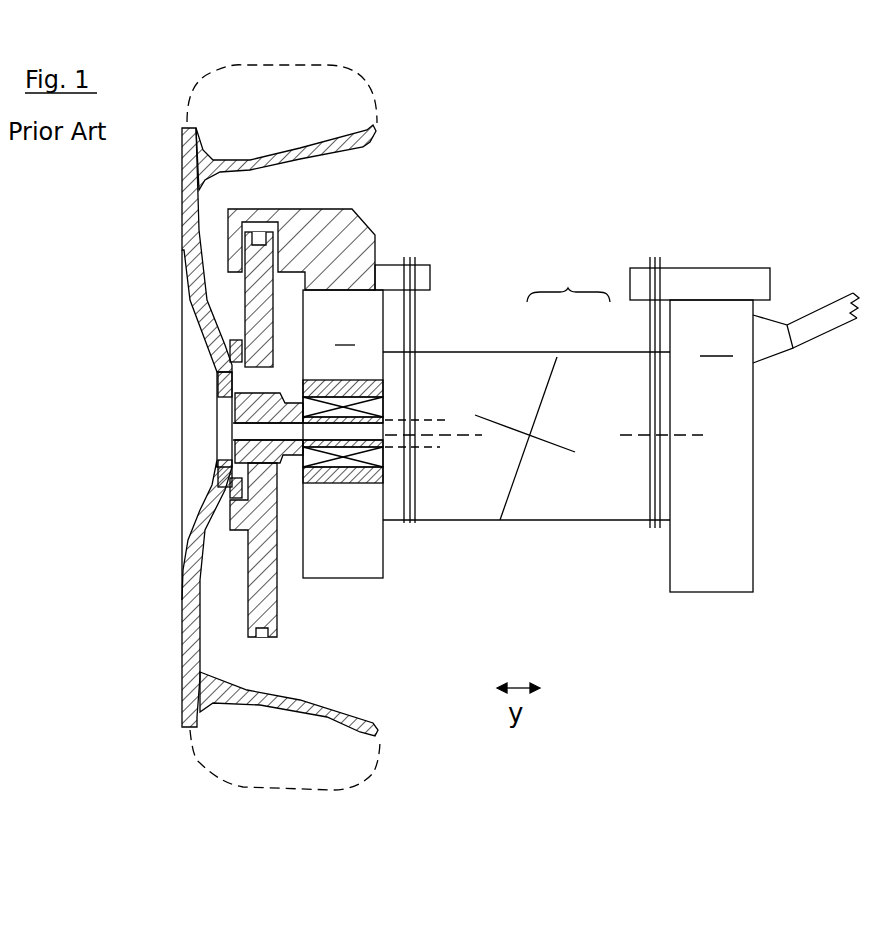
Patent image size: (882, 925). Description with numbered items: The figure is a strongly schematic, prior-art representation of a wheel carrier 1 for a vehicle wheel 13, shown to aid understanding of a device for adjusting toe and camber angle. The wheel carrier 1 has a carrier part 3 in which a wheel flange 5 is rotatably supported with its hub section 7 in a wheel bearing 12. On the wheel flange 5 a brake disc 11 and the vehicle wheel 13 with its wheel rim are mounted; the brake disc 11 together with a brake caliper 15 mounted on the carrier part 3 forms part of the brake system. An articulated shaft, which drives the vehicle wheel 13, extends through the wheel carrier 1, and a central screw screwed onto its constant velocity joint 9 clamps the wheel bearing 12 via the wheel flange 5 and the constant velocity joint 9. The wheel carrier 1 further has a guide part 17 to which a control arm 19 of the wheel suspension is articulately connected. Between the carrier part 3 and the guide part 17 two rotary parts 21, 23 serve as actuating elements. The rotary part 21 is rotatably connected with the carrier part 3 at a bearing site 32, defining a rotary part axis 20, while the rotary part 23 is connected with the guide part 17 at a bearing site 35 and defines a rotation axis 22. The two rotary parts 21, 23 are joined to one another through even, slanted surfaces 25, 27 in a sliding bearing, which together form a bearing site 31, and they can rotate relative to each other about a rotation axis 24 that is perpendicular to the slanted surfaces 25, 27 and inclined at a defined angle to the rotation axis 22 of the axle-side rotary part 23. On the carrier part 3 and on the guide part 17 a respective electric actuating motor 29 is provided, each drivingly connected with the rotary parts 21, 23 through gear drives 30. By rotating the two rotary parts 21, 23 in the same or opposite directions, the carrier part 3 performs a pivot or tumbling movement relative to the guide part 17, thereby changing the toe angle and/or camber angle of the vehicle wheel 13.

The wheel carrier 1 is at (552, 194).
The carrier part 3 is at (343, 434).
The wheel flange 5 is at (232, 443).
The hub section 7 is at (303, 470).
The constant velocity joint 9 is at (430, 417).
The brake disc 11 is at (245, 280).
The wheel bearing 12 is at (385, 480).
The vehicle wheel 13 is at (182, 190).
The brake caliper 15 is at (287, 208).
The guide part 17 is at (686, 446).
The control arm 19 is at (843, 312).
The rotary part axis 20 is at (480, 440).
The rotary part 21 is at (468, 520).
The rotation axis 22 is at (683, 437).
The rotary part 23 is at (590, 522).
The rotation axis 24 is at (615, 510).
The slanted surface 25 is at (555, 366).
The slanted surface 27 is at (547, 386).
The electric actuating motor 29 is at (385, 276).
The gear drive 30 is at (417, 344).
The bearing site 31 is at (568, 280).
The bearing site 32 is at (217, 368).
The bearing site 35 is at (670, 388).